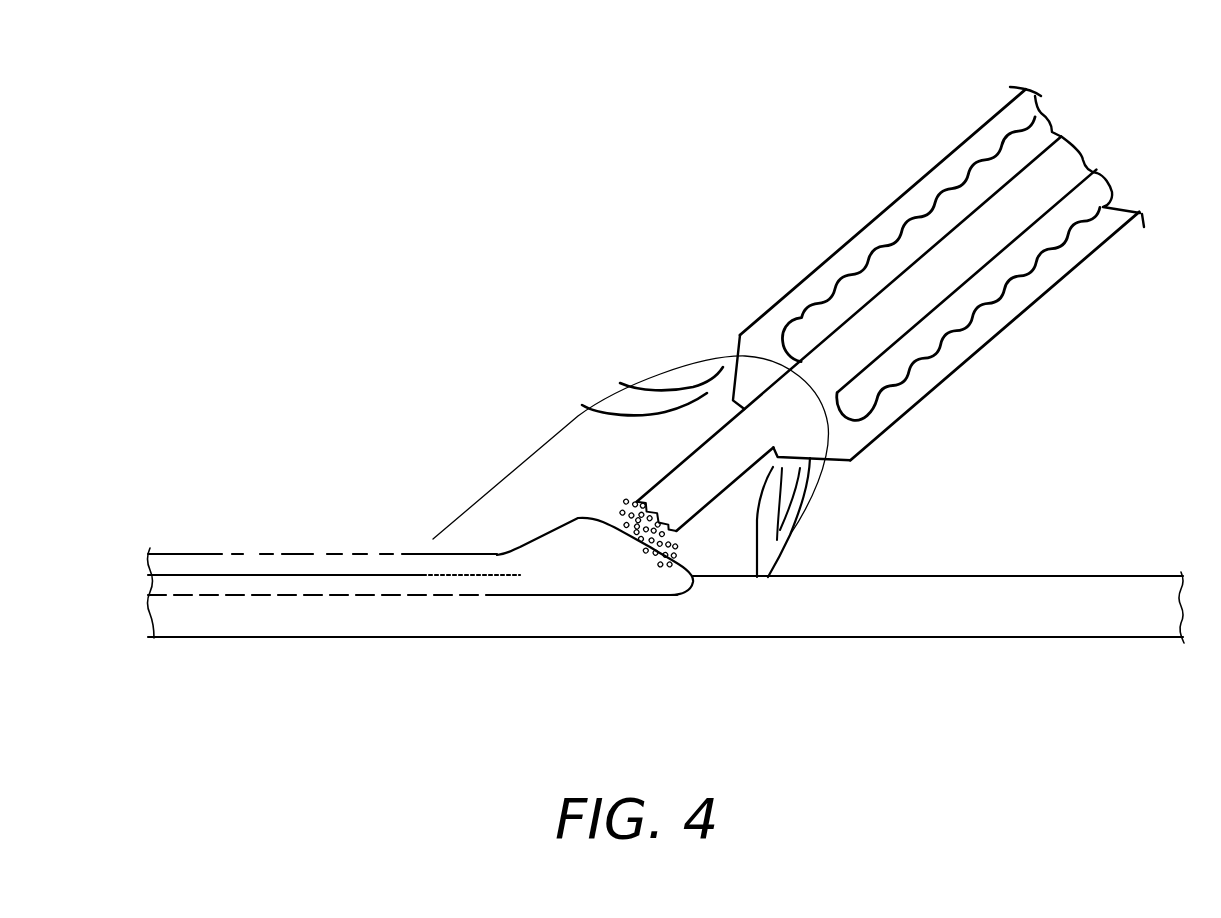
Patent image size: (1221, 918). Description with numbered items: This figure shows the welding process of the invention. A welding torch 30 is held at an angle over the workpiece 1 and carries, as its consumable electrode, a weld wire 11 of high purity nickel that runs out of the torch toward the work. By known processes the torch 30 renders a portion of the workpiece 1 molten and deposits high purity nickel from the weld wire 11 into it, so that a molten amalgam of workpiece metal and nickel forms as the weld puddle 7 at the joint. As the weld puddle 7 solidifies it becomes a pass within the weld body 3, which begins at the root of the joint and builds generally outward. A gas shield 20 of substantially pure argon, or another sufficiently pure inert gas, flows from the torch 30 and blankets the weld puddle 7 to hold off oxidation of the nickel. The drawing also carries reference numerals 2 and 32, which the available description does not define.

The workpiece 1 is at (1085, 598).
The second member 2 is at (532, 618).
The weld body 3 is at (320, 562).
The weld puddle 7 is at (608, 567).
The weld wire 11 is at (897, 308).
The gas shield 20 is at (667, 377).
The welding torch 30 is at (1083, 253).
The cut end of welding head 32 is at (1050, 113).